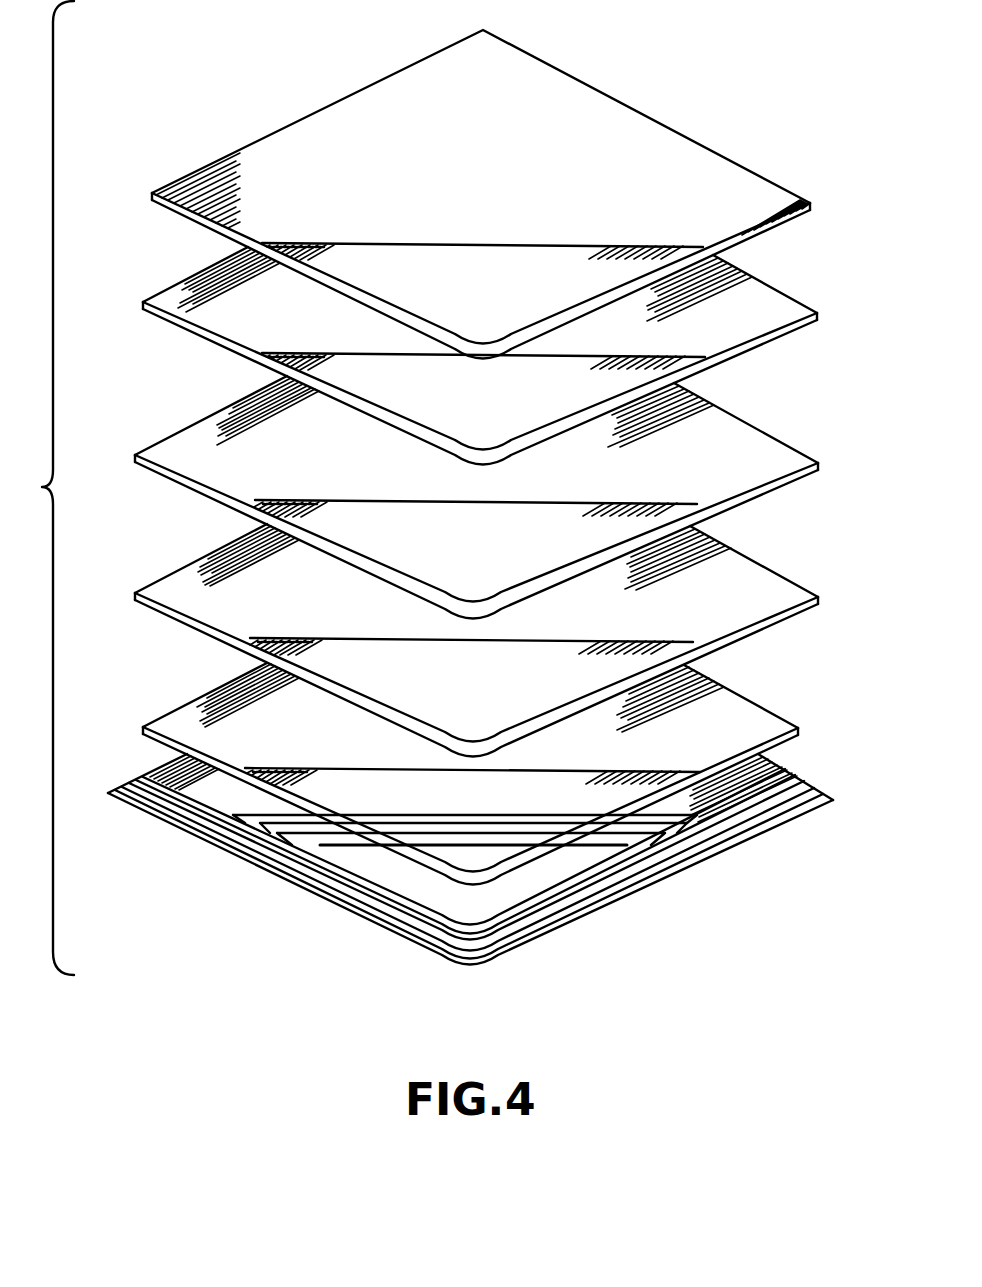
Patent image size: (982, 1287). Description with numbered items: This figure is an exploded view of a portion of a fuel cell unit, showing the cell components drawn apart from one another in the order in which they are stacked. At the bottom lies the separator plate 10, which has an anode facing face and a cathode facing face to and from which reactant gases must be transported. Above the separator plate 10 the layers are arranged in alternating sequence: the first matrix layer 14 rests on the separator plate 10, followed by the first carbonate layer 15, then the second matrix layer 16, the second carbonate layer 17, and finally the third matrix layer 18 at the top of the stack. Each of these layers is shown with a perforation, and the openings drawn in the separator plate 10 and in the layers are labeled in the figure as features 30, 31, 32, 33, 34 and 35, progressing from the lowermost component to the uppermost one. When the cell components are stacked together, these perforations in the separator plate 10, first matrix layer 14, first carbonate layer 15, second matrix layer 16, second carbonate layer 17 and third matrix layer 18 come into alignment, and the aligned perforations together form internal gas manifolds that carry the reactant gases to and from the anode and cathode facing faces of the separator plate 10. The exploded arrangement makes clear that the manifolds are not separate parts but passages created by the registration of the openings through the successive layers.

The separator plate 10 is at (613, 905).
The first matrix layer 14 is at (745, 698).
The first carbonate layer 15 is at (753, 562).
The second matrix layer 16 is at (757, 425).
The second carbonate layer 17 is at (765, 278).
The third matrix layer 18 is at (740, 162).
The stepped recess in base plate 30 is at (442, 900).
The opening in plate 14 31 is at (455, 866).
The opening in plate 15 32 is at (263, 662).
The opening in plate 16 33 is at (262, 520).
The opening in plate 17 34 is at (272, 370).
The opening in plate 18 35 is at (272, 258).